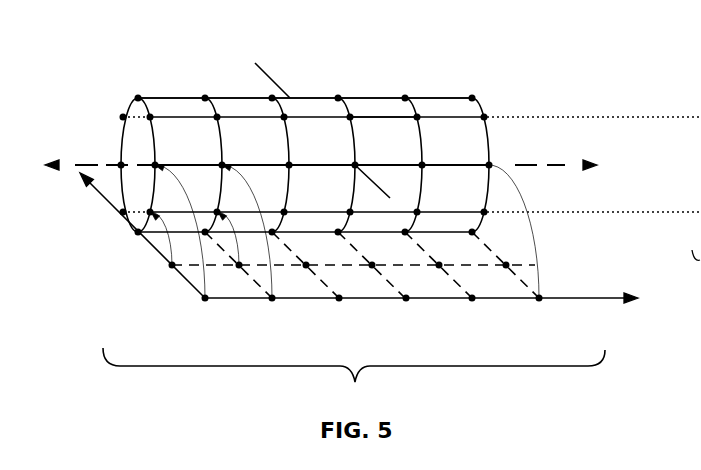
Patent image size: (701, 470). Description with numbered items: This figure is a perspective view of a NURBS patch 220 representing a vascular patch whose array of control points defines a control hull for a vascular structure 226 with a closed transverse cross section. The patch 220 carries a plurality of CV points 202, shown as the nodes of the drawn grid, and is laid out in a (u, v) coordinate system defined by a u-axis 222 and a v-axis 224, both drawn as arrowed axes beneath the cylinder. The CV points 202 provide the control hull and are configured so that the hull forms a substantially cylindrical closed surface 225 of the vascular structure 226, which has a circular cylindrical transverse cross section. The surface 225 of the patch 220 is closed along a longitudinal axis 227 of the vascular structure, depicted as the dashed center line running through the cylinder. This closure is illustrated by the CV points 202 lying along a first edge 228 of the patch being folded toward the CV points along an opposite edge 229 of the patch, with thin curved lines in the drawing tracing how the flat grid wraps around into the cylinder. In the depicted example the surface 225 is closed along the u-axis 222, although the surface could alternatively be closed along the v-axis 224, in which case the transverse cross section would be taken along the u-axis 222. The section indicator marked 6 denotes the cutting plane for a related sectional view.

The NURBS patch 220 is at (474, 61).
The vascular structure 226 is at (172, 107).
The CV points 202 is at (340, 96).
The substantially cylindrical closed surface 225 is at (374, 110).
The opposite edge 229 is at (476, 160).
The longitudinal axis 227 is at (565, 163).
The first edge 228 is at (461, 169).
The u-axis 222 is at (575, 297).
The v-axis 224 is at (190, 283).
The section line for FIG. 6 is at (376, 198).